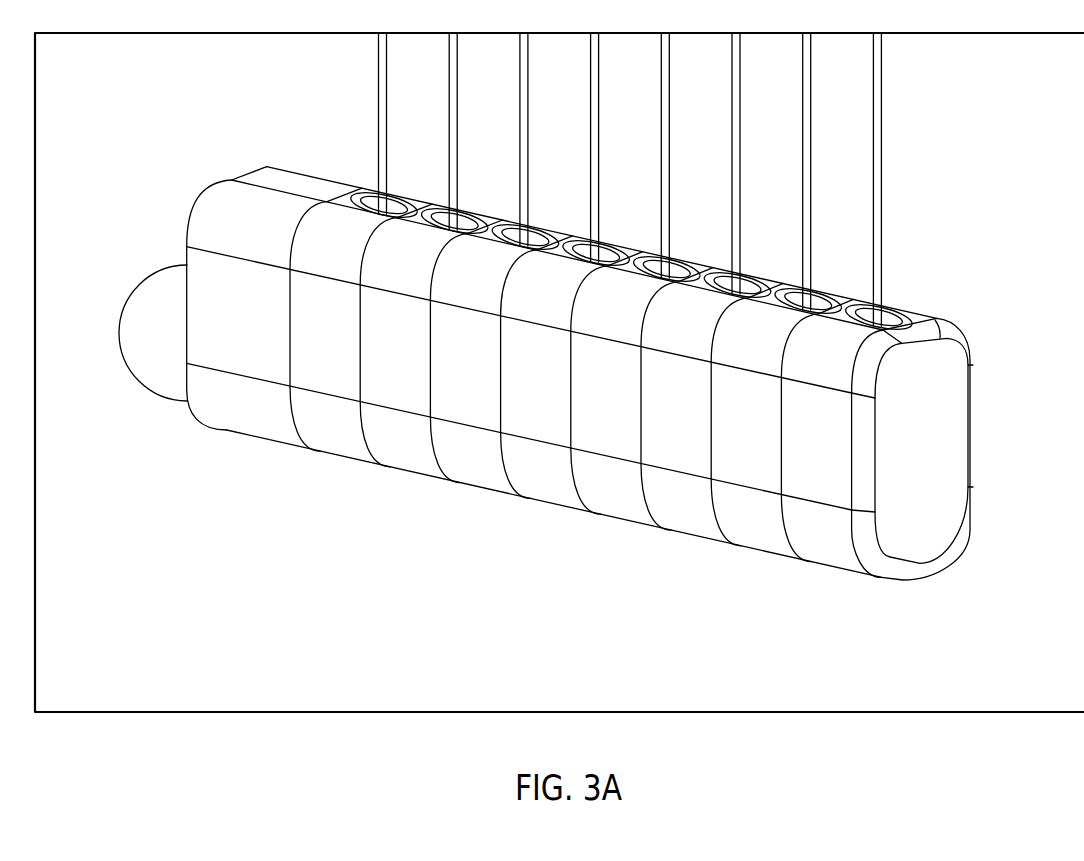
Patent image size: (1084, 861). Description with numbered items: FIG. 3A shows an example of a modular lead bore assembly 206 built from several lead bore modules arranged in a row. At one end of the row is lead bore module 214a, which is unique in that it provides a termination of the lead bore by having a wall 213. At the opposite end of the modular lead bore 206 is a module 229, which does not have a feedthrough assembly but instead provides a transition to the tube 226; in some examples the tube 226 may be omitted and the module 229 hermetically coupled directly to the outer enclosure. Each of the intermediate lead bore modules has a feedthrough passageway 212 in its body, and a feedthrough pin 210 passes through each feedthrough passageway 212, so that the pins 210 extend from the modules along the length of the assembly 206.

The modular lead bore assembly 206 is at (377, 585).
The feedthrough pin 210 is at (877, 197).
The feedthrough passageway 212 is at (900, 310).
The wall 213 is at (930, 455).
The lead bore module 214a is at (832, 548).
The tube 226 is at (153, 362).
The module 229 is at (243, 203).